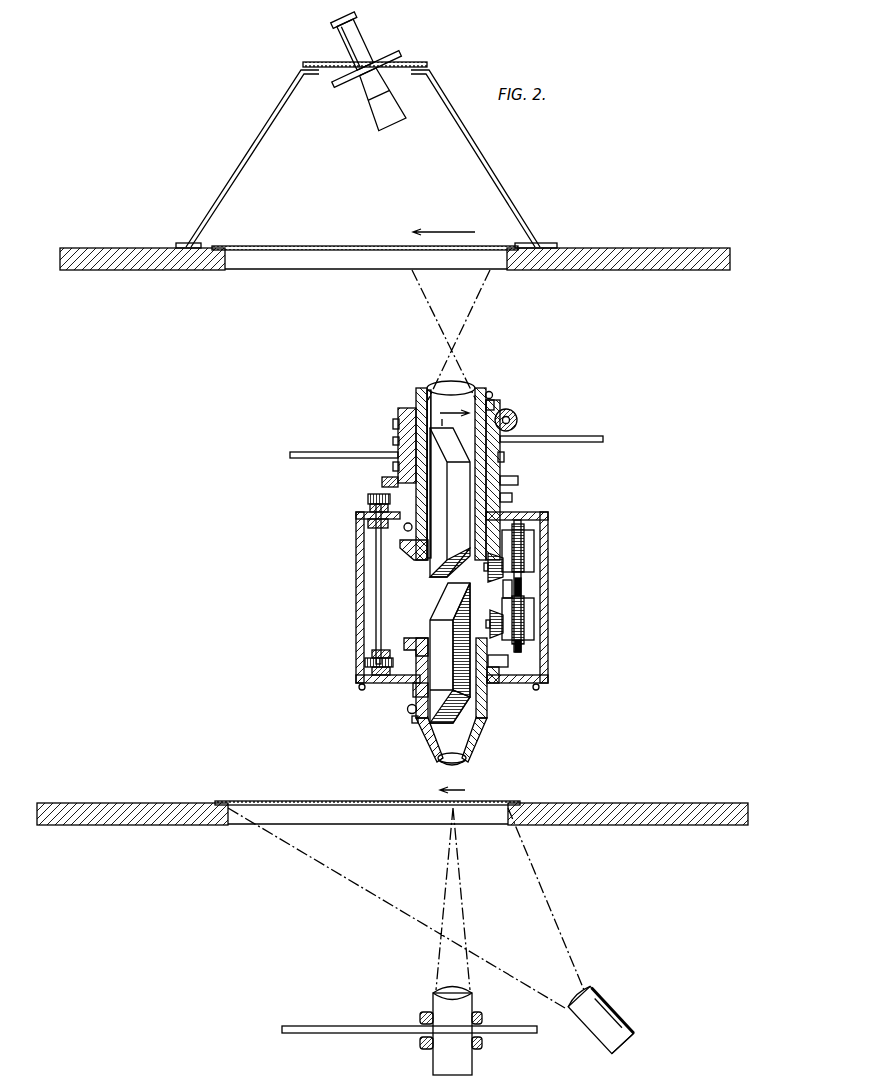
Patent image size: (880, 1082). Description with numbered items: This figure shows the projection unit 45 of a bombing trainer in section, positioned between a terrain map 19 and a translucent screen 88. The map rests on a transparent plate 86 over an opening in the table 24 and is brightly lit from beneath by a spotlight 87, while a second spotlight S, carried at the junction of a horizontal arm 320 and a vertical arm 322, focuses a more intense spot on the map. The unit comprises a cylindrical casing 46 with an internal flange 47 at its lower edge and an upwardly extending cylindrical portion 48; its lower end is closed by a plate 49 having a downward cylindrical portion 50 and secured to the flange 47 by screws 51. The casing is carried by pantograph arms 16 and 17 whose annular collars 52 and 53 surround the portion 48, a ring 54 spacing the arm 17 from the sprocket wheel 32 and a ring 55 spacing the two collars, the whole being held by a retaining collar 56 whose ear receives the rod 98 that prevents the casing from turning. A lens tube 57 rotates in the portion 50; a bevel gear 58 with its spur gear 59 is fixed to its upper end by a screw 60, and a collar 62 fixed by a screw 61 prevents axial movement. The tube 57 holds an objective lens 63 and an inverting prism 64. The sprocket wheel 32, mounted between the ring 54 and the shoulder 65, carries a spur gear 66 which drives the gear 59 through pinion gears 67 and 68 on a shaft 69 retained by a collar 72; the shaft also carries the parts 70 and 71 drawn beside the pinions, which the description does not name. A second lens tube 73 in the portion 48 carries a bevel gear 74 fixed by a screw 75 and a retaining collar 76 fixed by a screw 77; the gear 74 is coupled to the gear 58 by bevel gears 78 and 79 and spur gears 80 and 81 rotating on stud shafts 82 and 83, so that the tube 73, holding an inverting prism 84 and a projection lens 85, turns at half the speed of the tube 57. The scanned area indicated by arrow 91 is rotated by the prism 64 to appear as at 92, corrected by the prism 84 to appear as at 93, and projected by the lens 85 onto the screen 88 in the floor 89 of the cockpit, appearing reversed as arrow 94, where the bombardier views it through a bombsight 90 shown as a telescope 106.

The pantograph arm 16 is at (586, 436).
The pantograph arm 17 is at (294, 452).
The terrain map 19 is at (262, 801).
The table 24 is at (588, 803).
The sprocket wheel 32 is at (518, 481).
The projection unit 45 is at (332, 407).
The cylindrical casing 46 is at (356, 580).
The internal flange 47 is at (538, 678).
The cylindrical portion 48 is at (500, 476).
The plate 49 is at (520, 685).
The cylindrical portion 50 is at (410, 688).
The screw 51 is at (360, 689).
The annular collar 52 is at (394, 425).
The annular collar 53 is at (504, 457).
The ring 54 is at (394, 466).
The ring 55 is at (394, 442).
The retaining collar 56 is at (402, 412).
The lens tube 57 is at (472, 742).
The bevel gear 58 is at (406, 640).
The spur gear 59 is at (508, 662).
The screw 60 is at (495, 685).
The screw 61 is at (407, 710).
The collar 62 is at (416, 722).
The objective lens 63 is at (446, 762).
The inverting prism 64 is at (430, 745).
The shoulder 65 is at (508, 516).
The spur gear 66 is at (513, 497).
The pinion gear 67 is at (366, 497).
The pinion gear 68 is at (366, 663).
The shaft 69 is at (376, 605).
The nut 70 is at (368, 508).
The nut 71 is at (372, 652).
The collar 72 is at (366, 523).
The second lens tube 73 is at (483, 390).
The bevel gear 74 is at (400, 556).
The screw 75 is at (404, 528).
The retaining collar 76 is at (492, 393).
The screw 77 is at (495, 407).
The bevel gear 78 is at (503, 590).
The bevel gear 79 is at (522, 600).
The spur gear 80 is at (535, 545).
The spur gear 81 is at (525, 615).
The stud shaft 82 is at (487, 562).
The stud shaft 83 is at (490, 628).
The inverting prism 84 is at (420, 392).
The projection lens 85 is at (436, 385).
The transparent plate 86 is at (358, 806).
The spotlight 87 is at (621, 1010).
The translucent screen 88 is at (274, 247).
The floor 89 is at (634, 248).
The bombsight 90 is at (312, 62).
The arrow 91 is at (455, 789).
The rotated image 92 is at (447, 583).
The image 93 is at (458, 386).
The arrow 94 is at (445, 231).
The rod 98 is at (517, 422).
The telescope 106 is at (374, 112).
The horizontal arm 320 is at (333, 1033).
The vertical arm 322 is at (420, 1041).
The spotlight S is at (473, 1055).